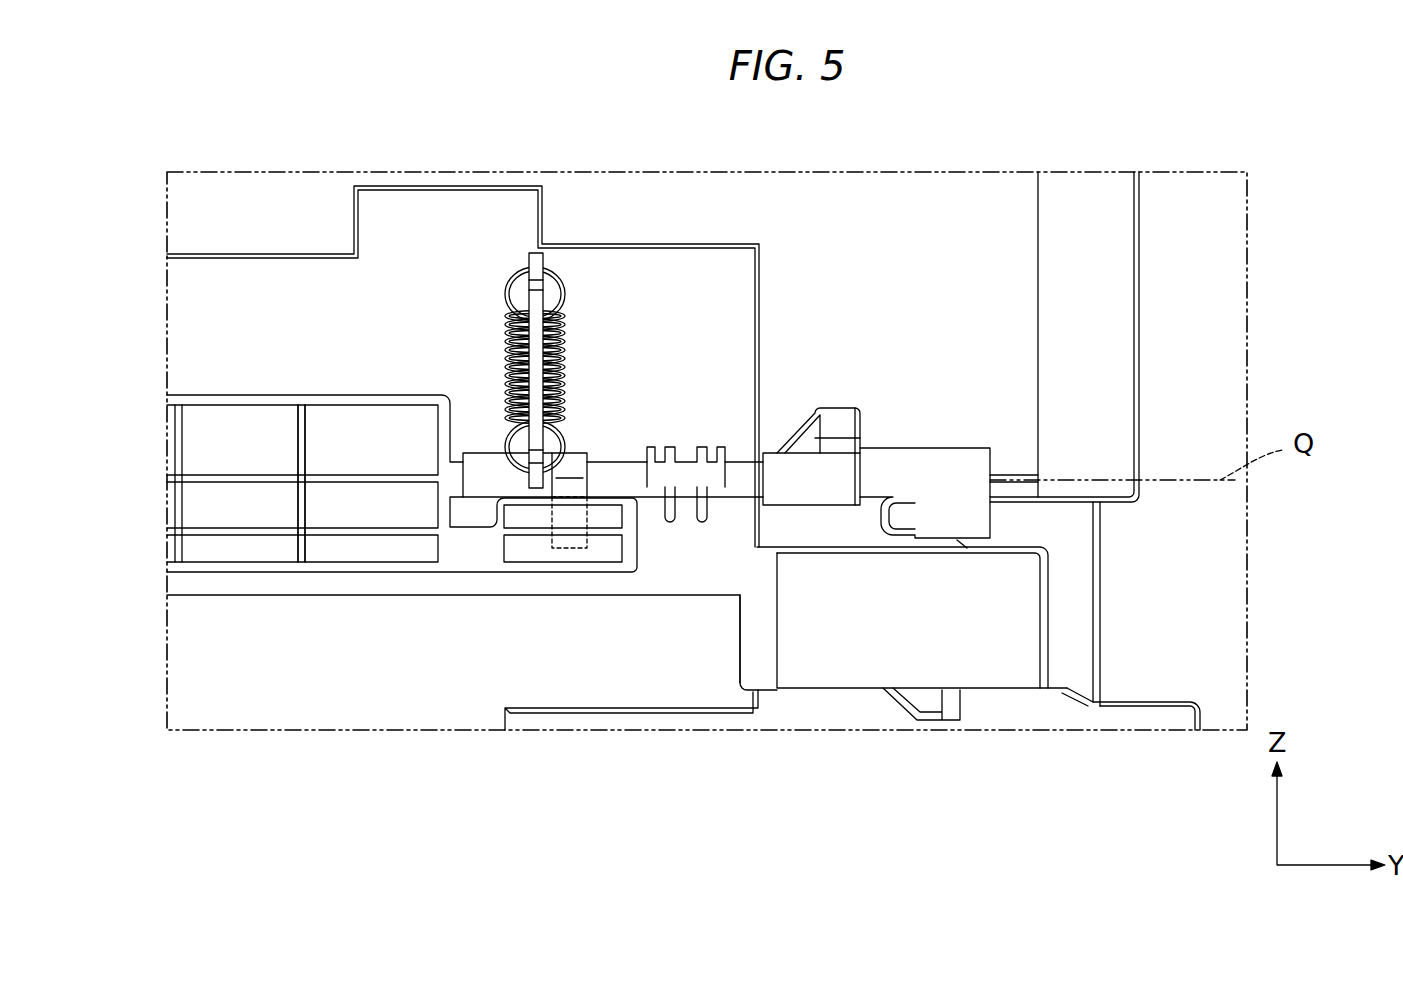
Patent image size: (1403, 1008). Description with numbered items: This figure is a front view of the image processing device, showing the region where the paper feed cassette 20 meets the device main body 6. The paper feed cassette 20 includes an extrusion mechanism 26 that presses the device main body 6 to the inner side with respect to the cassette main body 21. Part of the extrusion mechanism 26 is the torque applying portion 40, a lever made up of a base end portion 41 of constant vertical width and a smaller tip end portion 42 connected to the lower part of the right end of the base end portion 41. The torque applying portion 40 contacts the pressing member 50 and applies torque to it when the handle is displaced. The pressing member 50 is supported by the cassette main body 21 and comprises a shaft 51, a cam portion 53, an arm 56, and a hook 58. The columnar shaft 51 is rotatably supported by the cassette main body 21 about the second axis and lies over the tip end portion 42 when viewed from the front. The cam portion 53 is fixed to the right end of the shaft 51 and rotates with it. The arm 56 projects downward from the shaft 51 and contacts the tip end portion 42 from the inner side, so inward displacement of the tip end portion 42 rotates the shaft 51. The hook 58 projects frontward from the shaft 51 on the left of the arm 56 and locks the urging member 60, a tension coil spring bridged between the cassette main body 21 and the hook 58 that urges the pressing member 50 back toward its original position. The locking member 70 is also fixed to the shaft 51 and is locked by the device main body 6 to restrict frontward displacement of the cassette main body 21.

The device main body 6 is at (1213, 557).
The paper feed cassette 20 is at (463, 327).
The cassette main body 21 is at (397, 232).
The extrusion mechanism 26 is at (717, 546).
The torque applying portion 40 is at (383, 574).
The base end portion 41 is at (243, 573).
The tip end portion 42 is at (623, 575).
The pressing member 50 is at (747, 458).
The shaft 51 is at (615, 473).
The cam portion 53 is at (950, 515).
The arm 56 is at (570, 548).
The hook 58 is at (535, 468).
The urging member 60 is at (503, 357).
The locking member 70 is at (837, 418).